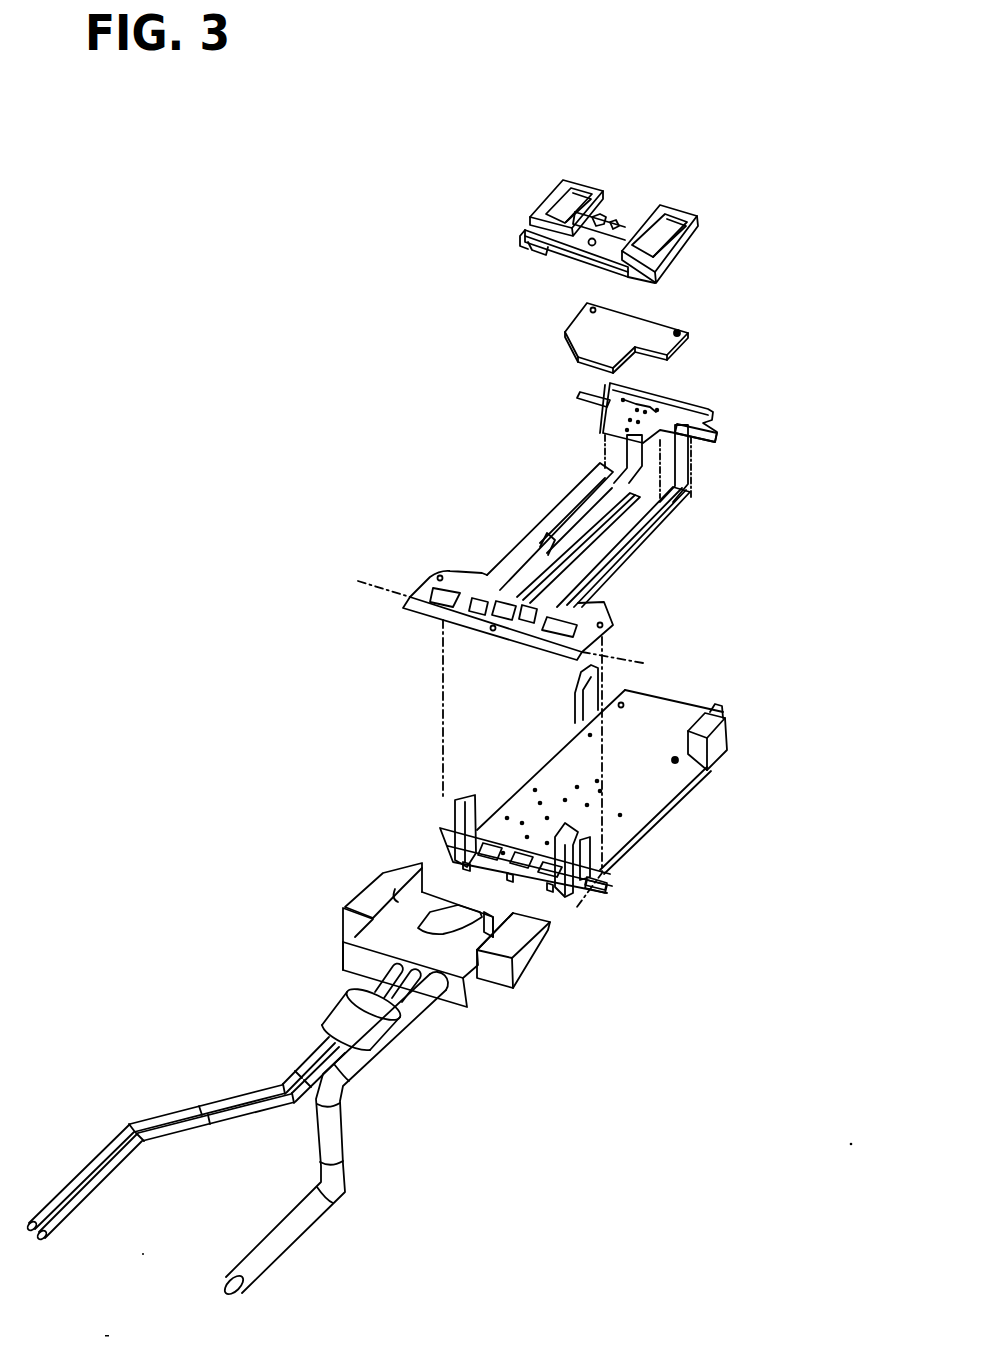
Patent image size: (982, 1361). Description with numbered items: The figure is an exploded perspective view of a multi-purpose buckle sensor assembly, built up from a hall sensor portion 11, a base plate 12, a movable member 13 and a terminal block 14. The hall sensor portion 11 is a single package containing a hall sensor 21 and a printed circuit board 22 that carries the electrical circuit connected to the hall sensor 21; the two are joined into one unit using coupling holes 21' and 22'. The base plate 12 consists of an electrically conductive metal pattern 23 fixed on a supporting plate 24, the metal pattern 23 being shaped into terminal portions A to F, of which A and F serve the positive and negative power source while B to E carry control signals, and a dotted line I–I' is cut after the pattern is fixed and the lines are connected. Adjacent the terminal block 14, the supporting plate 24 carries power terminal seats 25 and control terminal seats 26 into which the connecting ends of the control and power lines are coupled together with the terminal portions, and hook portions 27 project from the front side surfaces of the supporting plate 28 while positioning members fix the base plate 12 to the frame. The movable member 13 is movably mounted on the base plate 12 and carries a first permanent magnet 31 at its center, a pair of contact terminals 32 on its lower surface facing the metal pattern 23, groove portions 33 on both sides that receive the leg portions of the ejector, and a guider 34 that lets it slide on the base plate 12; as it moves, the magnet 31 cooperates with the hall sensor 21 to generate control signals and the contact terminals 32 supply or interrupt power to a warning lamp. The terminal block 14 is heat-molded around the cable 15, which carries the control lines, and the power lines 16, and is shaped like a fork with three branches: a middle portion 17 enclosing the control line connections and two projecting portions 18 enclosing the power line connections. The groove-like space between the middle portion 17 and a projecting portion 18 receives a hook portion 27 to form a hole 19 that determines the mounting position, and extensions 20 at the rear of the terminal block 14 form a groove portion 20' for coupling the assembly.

The hall sensor portion 11 is at (456, 333).
The base plate 12 is at (758, 540).
The movable member 13 is at (512, 196).
The terminal block 14 is at (352, 878).
The cable 15 is at (297, 1227).
The power lines 16 is at (197, 1102).
The middle portion 17 is at (422, 873).
The projecting portions 18 is at (530, 965).
The hole 19 is at (497, 935).
The extensions 20 is at (274, 969).
The groove portion 20' is at (464, 1049).
The hall sensor 21 is at (635, 338).
The coupling hole 21' is at (744, 321).
The printed circuit board 22 is at (634, 432).
The coupling hole 22' is at (738, 402).
The metal pattern 23 is at (657, 537).
The supporting plate 24 is at (650, 703).
The power terminal seats 25 is at (607, 870).
The control terminal seats 26 is at (547, 940).
The hook portion 27 is at (578, 830).
The supporting plate 28 is at (723, 712).
The first permanent magnet 31 is at (543, 247).
The contact terminals 32 is at (617, 227).
The groove portion 33 is at (578, 180).
The guider 34 is at (648, 272).